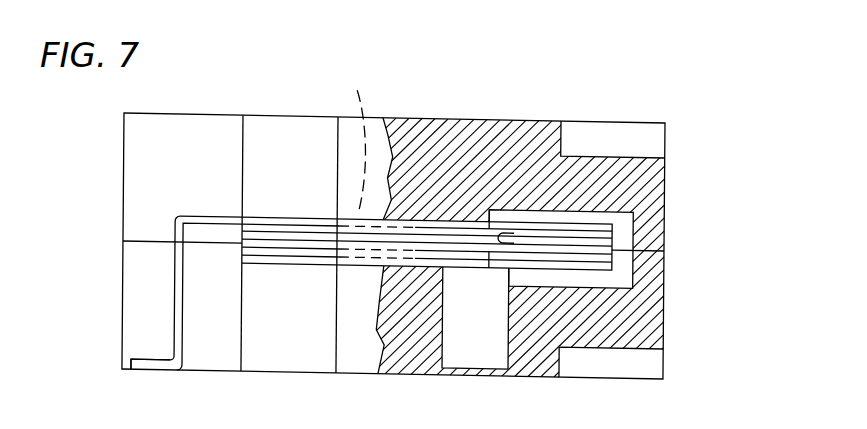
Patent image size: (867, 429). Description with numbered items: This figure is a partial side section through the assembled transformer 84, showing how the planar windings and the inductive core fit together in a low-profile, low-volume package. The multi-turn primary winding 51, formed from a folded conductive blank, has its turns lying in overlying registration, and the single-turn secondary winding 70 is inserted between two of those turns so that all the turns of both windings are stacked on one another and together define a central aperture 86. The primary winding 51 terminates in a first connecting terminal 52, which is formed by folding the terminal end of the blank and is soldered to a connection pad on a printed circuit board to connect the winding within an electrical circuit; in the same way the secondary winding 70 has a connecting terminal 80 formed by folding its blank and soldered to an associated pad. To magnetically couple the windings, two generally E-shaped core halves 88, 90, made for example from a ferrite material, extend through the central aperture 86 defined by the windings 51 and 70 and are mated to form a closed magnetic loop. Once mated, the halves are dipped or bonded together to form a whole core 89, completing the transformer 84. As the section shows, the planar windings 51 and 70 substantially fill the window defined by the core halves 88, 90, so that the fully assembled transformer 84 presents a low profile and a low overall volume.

The transformer 84 is at (91, 171).
The transformer primary winding 51 is at (208, 200).
The first connecting terminal 52 is at (151, 357).
The transformer secondary winding 70 is at (297, 245).
The central aperture 86 is at (360, 141).
The E-shaped core half 88 is at (665, 194).
The core 89 is at (687, 248).
The E-shaped core half 90 is at (665, 320).
The connecting terminal 80 is at (467, 367).